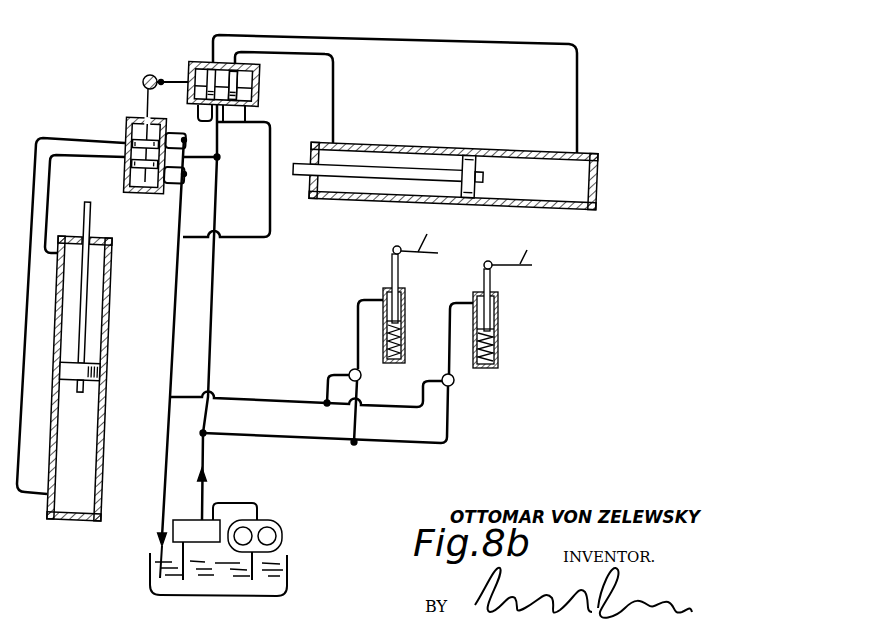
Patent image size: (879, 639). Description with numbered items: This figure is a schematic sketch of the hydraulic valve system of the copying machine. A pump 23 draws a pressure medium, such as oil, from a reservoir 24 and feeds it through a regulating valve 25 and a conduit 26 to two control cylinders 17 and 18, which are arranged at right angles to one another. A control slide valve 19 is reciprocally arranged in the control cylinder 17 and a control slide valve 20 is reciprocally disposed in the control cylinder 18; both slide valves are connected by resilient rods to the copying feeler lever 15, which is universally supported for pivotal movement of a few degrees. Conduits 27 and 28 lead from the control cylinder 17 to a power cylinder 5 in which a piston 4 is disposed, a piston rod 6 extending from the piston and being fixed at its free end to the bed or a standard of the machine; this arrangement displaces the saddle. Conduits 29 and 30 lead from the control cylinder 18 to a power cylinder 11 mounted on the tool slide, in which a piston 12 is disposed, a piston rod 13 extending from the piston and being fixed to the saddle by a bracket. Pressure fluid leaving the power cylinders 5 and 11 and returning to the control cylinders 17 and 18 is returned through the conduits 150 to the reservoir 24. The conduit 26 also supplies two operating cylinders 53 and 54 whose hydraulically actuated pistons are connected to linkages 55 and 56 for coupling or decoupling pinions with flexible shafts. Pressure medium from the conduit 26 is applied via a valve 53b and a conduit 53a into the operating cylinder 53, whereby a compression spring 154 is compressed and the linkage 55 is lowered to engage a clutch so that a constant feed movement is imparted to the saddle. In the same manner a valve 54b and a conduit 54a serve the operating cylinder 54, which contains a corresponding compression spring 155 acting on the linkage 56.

The piston 4 is at (473, 153).
The power cylinder 5 is at (387, 147).
The piston rod 6 is at (382, 172).
The power cylinder 11 is at (102, 422).
The piston 12 is at (100, 370).
The piston rod 13 is at (85, 308).
The copying feeler lever 15 is at (147, 73).
The control cylinder 17 is at (200, 63).
The control cylinder 18 is at (125, 188).
The control slide valve 19 is at (233, 81).
The control slide valve 20 is at (145, 143).
The pump 23 is at (280, 525).
The reservoir 24 is at (288, 578).
The regulating valve 25 is at (188, 520).
The conduit 26 is at (203, 160).
The conduit 27 is at (337, 97).
The conduit 28 is at (492, 52).
The conduit 29 is at (87, 163).
The conduit 30 is at (80, 118).
The operating cylinder 53 is at (498, 350).
The conduit 53a is at (453, 302).
The valve 53b is at (454, 384).
The operating cylinder 54 is at (403, 350).
The conduit 54a is at (358, 300).
The valve 54b is at (351, 371).
The linkage 55 is at (514, 249).
The linkage 56 is at (418, 235).
The return conduits 150 is at (180, 217).
The compression spring 154 is at (490, 368).
The compression spring 155 is at (400, 363).